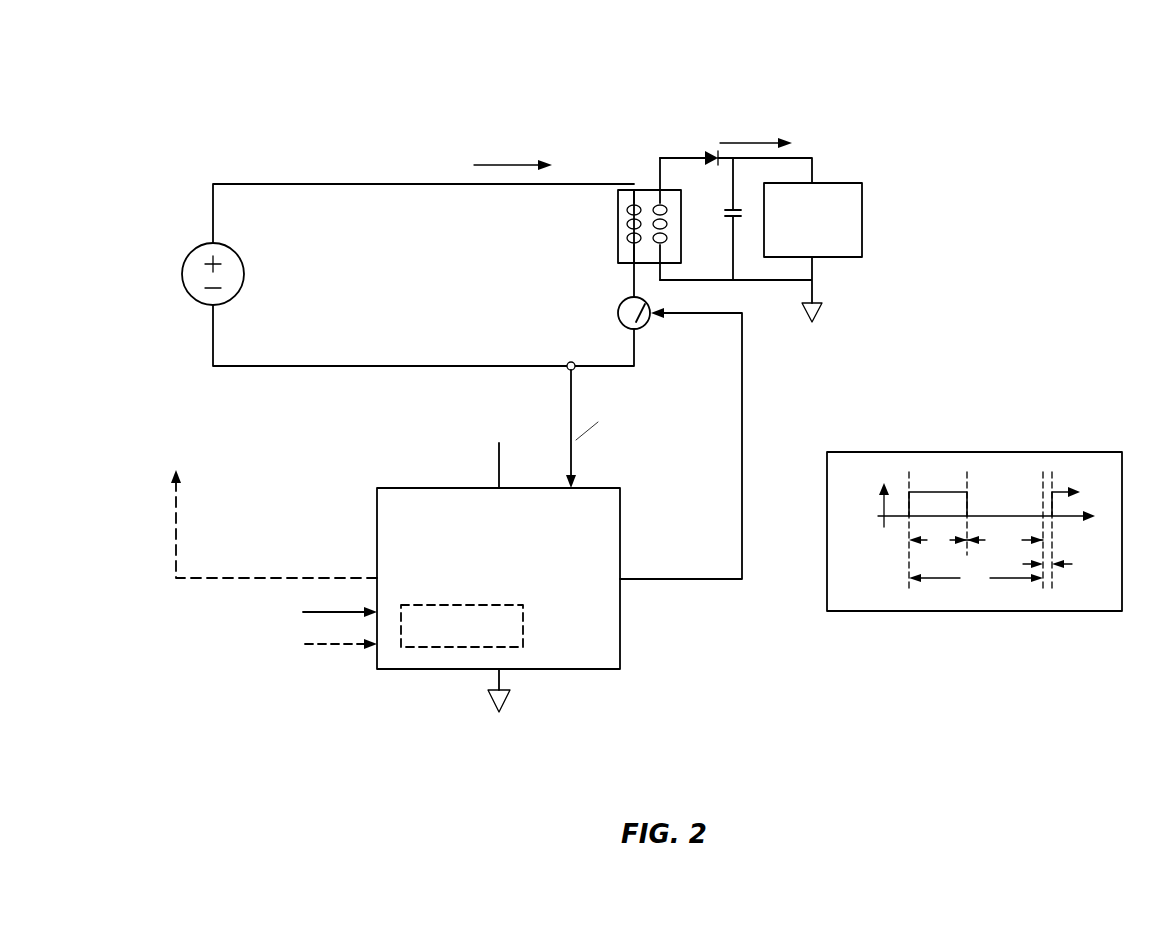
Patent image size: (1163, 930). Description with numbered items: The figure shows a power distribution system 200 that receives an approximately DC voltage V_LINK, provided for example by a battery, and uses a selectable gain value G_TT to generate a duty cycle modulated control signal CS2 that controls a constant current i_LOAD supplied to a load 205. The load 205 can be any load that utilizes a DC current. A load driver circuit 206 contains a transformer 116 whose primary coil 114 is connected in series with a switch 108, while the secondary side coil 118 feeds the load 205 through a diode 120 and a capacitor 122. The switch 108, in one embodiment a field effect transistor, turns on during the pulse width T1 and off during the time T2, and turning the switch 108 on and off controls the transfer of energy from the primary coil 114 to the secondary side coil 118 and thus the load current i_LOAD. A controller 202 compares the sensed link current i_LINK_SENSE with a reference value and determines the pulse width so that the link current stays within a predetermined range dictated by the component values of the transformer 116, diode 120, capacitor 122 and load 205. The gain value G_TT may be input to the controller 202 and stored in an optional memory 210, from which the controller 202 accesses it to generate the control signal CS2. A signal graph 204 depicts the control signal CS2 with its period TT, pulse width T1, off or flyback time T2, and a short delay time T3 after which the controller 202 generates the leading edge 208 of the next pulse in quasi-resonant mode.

The power distribution system 200 is at (344, 110).
The load driver circuit 206 is at (474, 117).
The primary coil 114 is at (626, 249).
The transformer 116 is at (653, 188).
The secondary side coil 118 is at (666, 250).
The diode 120 is at (705, 154).
The capacitor 122 is at (728, 216).
The load 205 is at (813, 220).
The switch 108 is at (646, 326).
The controller 202 is at (498, 566).
The memory 210 is at (523, 625).
The signal graph 204 is at (948, 452).
The leading edge 208 is at (908, 500).